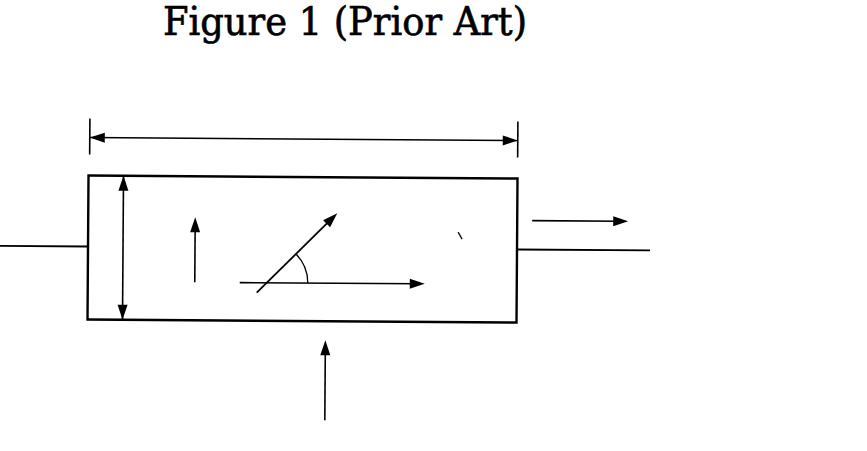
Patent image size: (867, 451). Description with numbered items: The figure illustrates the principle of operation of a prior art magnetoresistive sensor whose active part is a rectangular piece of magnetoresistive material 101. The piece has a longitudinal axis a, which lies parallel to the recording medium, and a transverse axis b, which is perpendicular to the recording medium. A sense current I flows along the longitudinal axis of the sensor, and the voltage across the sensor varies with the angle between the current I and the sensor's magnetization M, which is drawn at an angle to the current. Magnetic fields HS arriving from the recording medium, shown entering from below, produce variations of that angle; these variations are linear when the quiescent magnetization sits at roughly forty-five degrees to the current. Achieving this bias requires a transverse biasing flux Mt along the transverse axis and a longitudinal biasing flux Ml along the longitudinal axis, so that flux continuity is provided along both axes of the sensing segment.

The rectangular piece of magnetoresistive material 101 is at (504, 205).
The longitudinal axis a is at (304, 135).
The transverse axis b is at (130, 248).
The magnetization M is at (312, 252).
The transverse biasing flux Mt is at (185, 268).
The longitudinal biasing flux Ml is at (580, 208).
The sense current I is at (340, 290).
The magnetic field from the recording medium HS is at (339, 380).